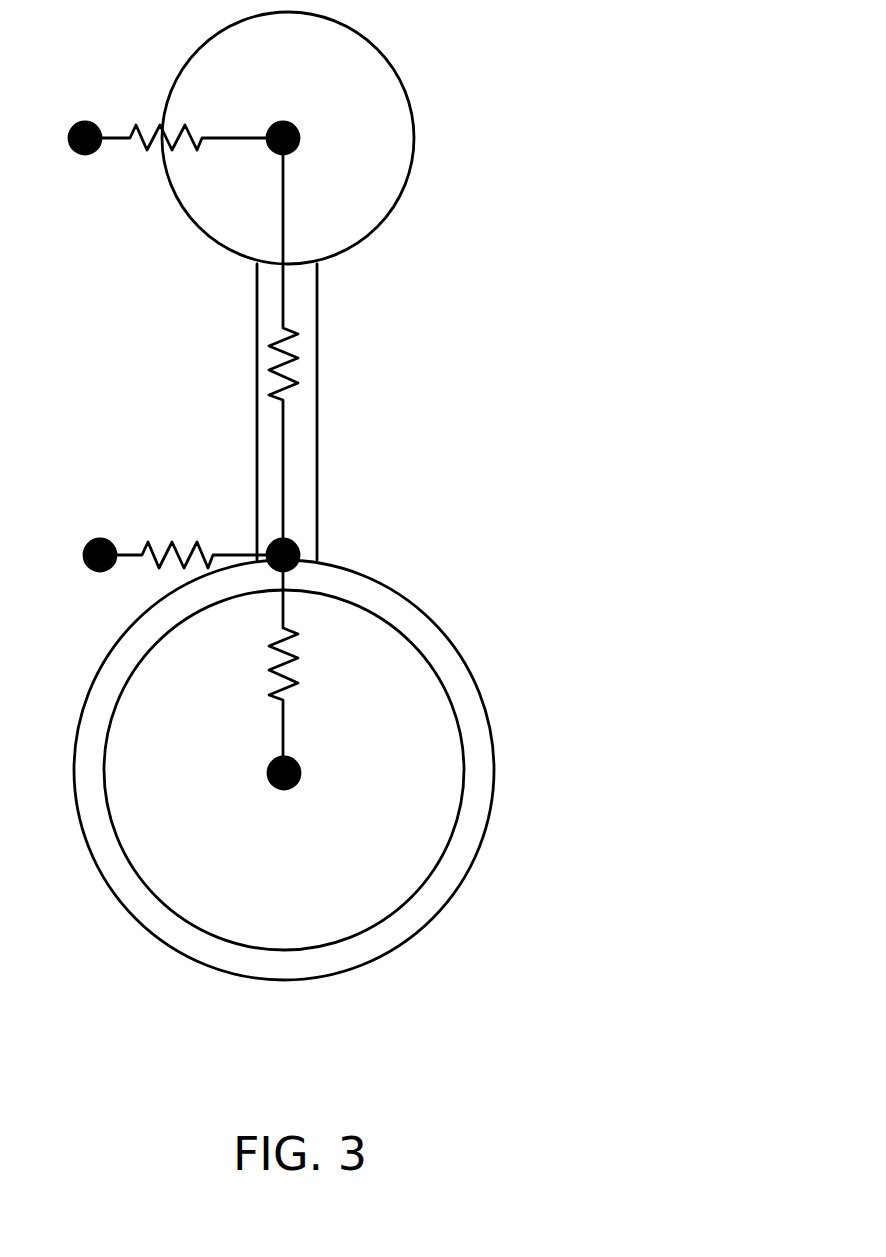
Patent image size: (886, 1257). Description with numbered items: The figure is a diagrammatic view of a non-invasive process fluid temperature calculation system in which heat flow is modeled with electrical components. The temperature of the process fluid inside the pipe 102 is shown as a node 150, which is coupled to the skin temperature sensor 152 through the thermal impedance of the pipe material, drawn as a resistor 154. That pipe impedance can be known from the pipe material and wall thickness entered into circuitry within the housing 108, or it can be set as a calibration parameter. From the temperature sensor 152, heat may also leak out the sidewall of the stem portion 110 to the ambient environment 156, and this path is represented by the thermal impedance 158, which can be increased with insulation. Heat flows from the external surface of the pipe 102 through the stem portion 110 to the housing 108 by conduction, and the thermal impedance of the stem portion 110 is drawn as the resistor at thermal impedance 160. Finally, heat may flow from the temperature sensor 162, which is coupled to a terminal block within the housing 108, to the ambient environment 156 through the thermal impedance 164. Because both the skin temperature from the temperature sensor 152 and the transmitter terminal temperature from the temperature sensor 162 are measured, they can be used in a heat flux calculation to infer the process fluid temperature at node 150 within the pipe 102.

The pipe 102 is at (465, 837).
The housing 108 is at (407, 88).
The stem portion 110 is at (306, 283).
The process fluid temperature 150 is at (268, 773).
The temperature sensor 152 is at (290, 548).
The resistor 154 is at (287, 690).
The ambient environment 156 is at (88, 156).
The thermal impedance 158 is at (160, 547).
The thermal impedance of stem portion 160 is at (280, 338).
The temperature sensor 162 is at (298, 141).
The thermal impedance 164 is at (147, 140).